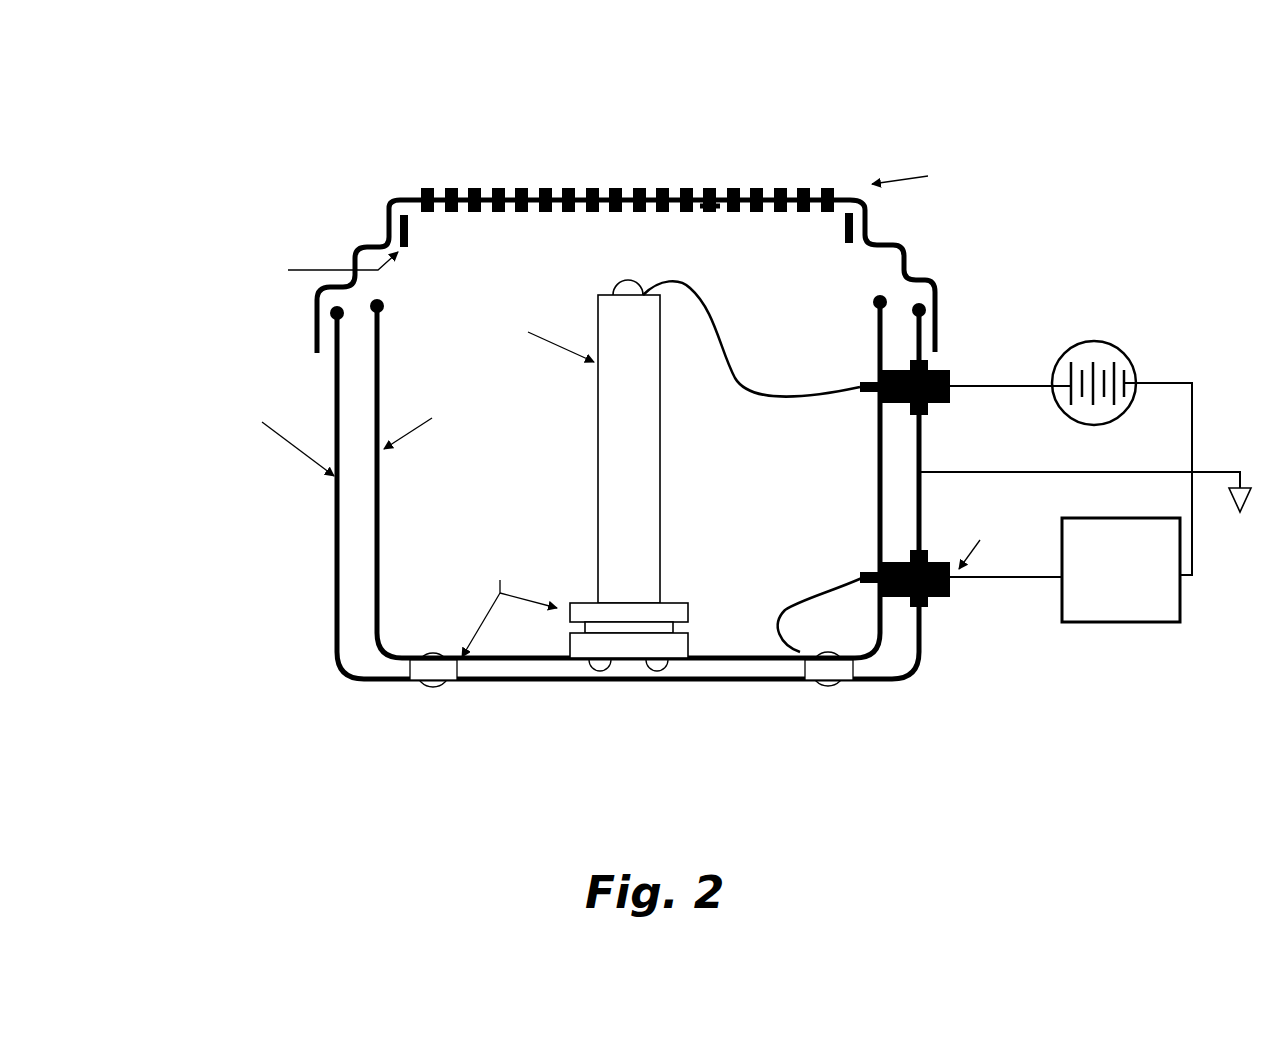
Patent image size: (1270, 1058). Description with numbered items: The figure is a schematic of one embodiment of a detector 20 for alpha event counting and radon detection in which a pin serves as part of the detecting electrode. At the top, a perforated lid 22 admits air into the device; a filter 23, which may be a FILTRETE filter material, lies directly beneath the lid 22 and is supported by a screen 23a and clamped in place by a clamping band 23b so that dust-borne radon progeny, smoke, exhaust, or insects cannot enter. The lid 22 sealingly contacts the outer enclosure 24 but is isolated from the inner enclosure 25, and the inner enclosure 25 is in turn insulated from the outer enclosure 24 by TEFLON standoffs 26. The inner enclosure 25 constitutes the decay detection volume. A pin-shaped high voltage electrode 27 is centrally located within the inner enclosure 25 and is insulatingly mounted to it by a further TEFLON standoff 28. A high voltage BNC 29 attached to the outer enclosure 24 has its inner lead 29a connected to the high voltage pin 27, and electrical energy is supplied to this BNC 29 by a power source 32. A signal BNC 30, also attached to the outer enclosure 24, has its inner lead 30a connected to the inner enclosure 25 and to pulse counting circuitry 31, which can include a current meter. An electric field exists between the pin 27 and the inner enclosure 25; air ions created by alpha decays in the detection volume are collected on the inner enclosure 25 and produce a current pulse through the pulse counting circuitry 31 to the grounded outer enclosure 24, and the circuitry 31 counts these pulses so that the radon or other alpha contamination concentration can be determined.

The detector 20 is at (704, 130).
The lid 22 is at (935, 300).
The filter 23 is at (441, 192).
The screen 23a is at (710, 208).
The clamping band 23b is at (846, 225).
The outer enclosure 24 is at (338, 577).
The inner enclosure 25 is at (880, 502).
The standoffs 26 is at (410, 668).
The high voltage electrode 27 is at (665, 478).
The standoff 28 is at (690, 645).
The high voltage BNC 29 is at (946, 365).
The inner lead 29a is at (723, 307).
The signal BNC 30 is at (953, 587).
The inner lead 30a is at (795, 598).
The pulse counting circuitry 31 is at (1100, 623).
The power source 32 is at (1094, 340).